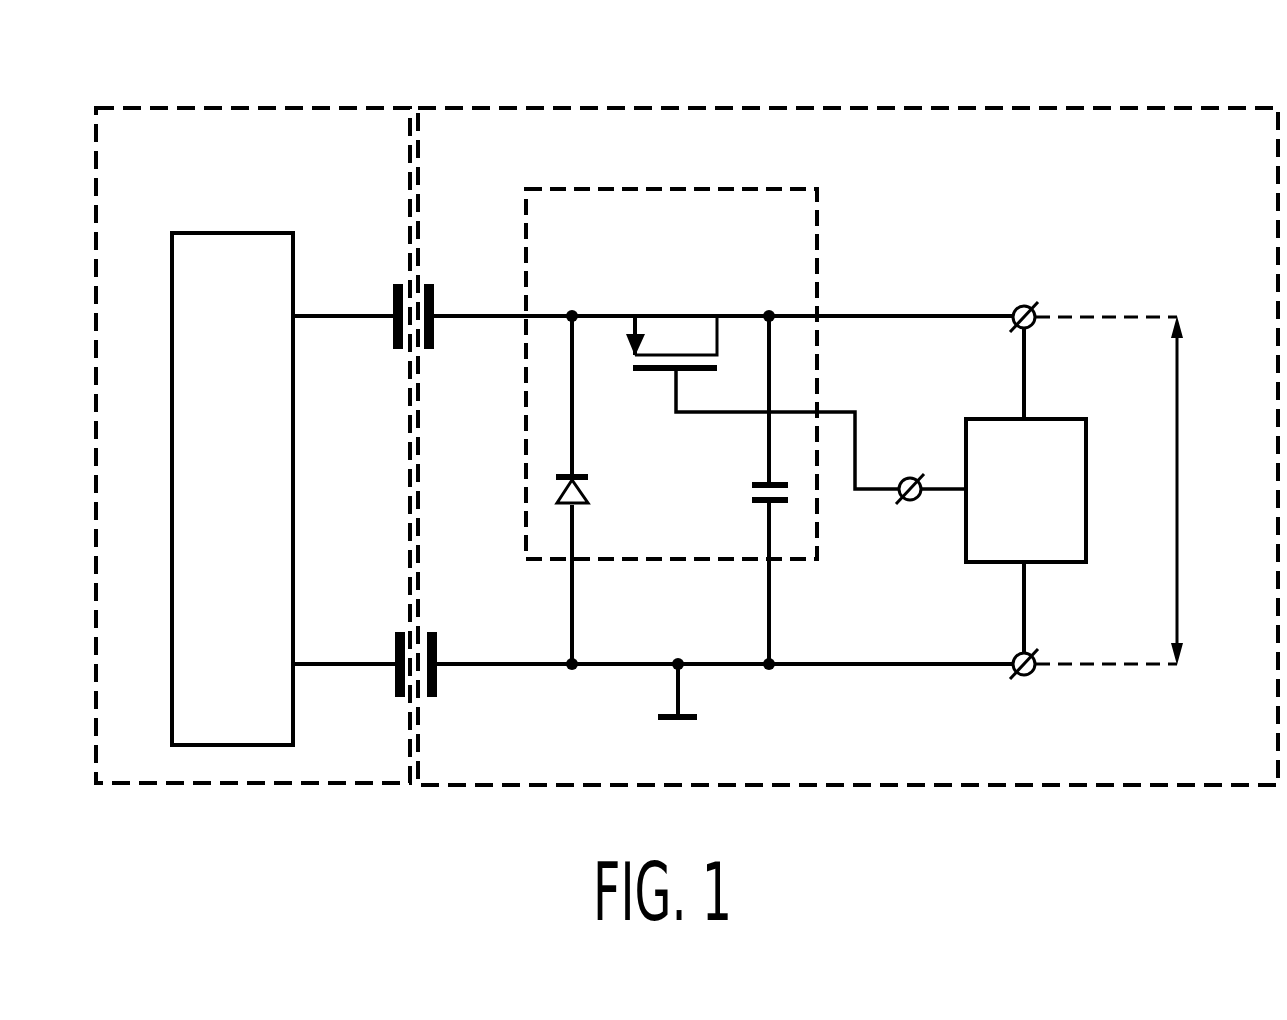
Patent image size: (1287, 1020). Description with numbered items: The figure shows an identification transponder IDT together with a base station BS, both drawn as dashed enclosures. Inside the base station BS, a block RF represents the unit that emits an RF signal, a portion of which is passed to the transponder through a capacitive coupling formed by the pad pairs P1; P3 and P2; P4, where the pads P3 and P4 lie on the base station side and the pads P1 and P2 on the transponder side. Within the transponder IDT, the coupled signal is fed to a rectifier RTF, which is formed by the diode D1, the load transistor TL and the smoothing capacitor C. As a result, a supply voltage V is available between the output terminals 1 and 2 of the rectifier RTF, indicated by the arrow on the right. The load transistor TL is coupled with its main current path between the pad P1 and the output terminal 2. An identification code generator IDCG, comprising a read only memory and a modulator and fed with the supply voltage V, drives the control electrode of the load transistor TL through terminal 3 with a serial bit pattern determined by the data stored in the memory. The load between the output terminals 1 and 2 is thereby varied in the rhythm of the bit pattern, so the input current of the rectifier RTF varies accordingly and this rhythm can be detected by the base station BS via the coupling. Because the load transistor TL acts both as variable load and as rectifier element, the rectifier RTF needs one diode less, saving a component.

The base station BS is at (235, 108).
The identification transponder IDT is at (830, 108).
The rectifier RTF is at (818, 220).
The RF signal RF is at (232, 489).
The pad (coupling) P1 is at (434, 300).
The pad (coupling) P2 is at (437, 647).
The pad (coupling) P3 is at (393, 300).
The pad (coupling) P4 is at (395, 647).
The load transistor TL is at (675, 340).
The diode D1 is at (588, 495).
The smoothing capacitor C is at (752, 491).
The output terminal 1 is at (1028, 676).
The output terminal 2 is at (1022, 303).
The third terminal 3 is at (912, 477).
The identification code generator IDCG is at (1068, 562).
The supply voltage V is at (1182, 490).